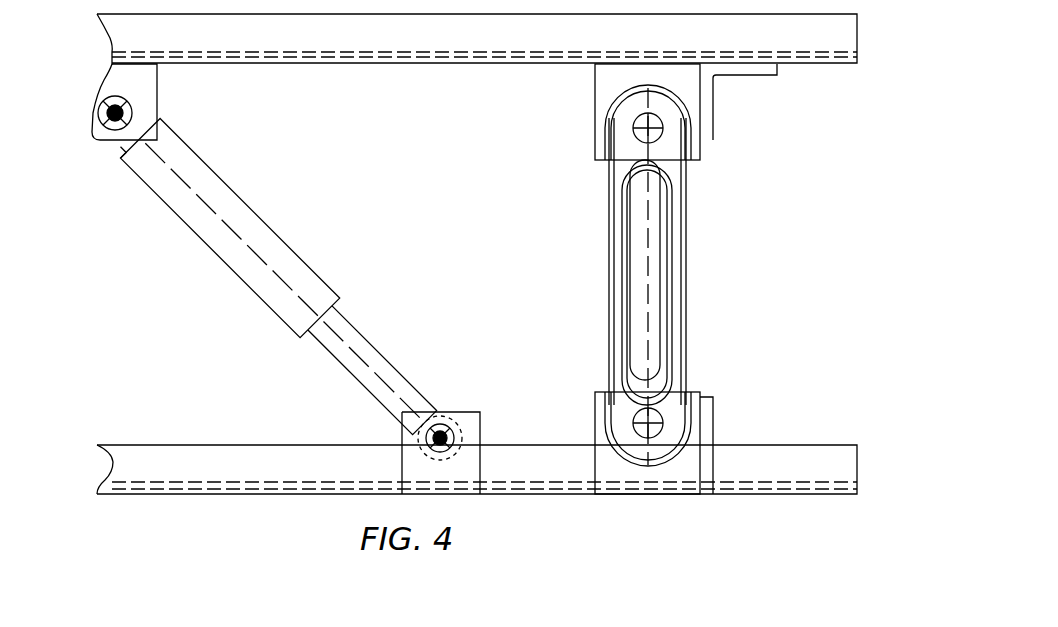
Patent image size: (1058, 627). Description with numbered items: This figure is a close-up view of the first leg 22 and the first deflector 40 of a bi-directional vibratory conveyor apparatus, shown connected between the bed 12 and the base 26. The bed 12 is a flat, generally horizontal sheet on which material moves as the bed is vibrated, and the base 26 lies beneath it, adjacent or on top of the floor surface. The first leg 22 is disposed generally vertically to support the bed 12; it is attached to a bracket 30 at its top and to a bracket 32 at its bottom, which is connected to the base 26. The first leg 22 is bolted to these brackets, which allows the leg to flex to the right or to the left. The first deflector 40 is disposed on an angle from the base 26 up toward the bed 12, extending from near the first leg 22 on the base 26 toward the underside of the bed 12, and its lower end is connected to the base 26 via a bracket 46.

The bed 12 is at (170, 38).
The first leg 22 is at (663, 290).
The base 26 is at (743, 460).
The bracket 30 is at (693, 140).
The bracket 32 is at (690, 417).
The first deflector 40 is at (230, 251).
The bracket 46 is at (410, 457).